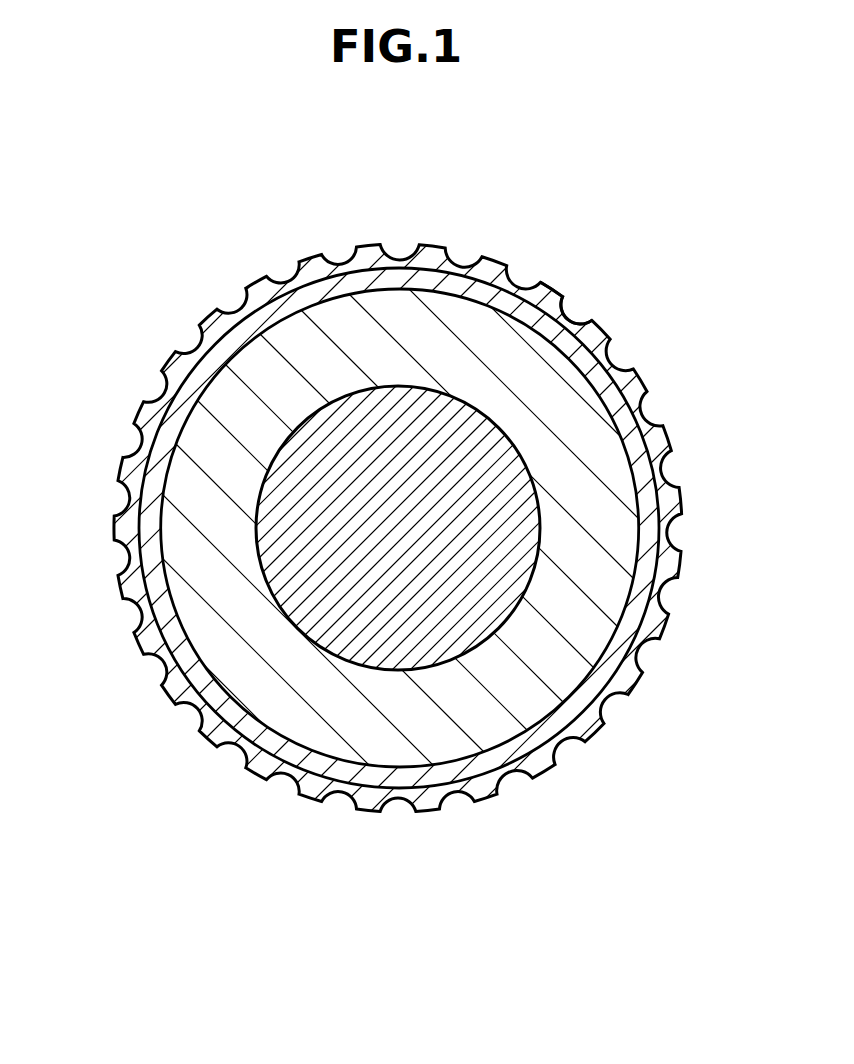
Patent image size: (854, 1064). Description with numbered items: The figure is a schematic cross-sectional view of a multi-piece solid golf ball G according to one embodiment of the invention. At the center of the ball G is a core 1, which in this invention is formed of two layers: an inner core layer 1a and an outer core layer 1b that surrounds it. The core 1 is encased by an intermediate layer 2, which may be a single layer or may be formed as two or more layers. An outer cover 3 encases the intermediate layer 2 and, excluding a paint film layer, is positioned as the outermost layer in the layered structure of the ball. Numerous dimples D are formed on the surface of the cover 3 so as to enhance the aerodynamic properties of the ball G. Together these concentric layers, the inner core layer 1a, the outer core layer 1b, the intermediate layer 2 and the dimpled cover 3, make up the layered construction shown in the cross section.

The golf ball G is at (116, 259).
The dimples D is at (567, 313).
The core 1 is at (443, 553).
The inner core layer 1a is at (467, 602).
The outer core layer 1b is at (508, 683).
The intermediate layer 2 is at (525, 742).
The cover 3 is at (485, 782).